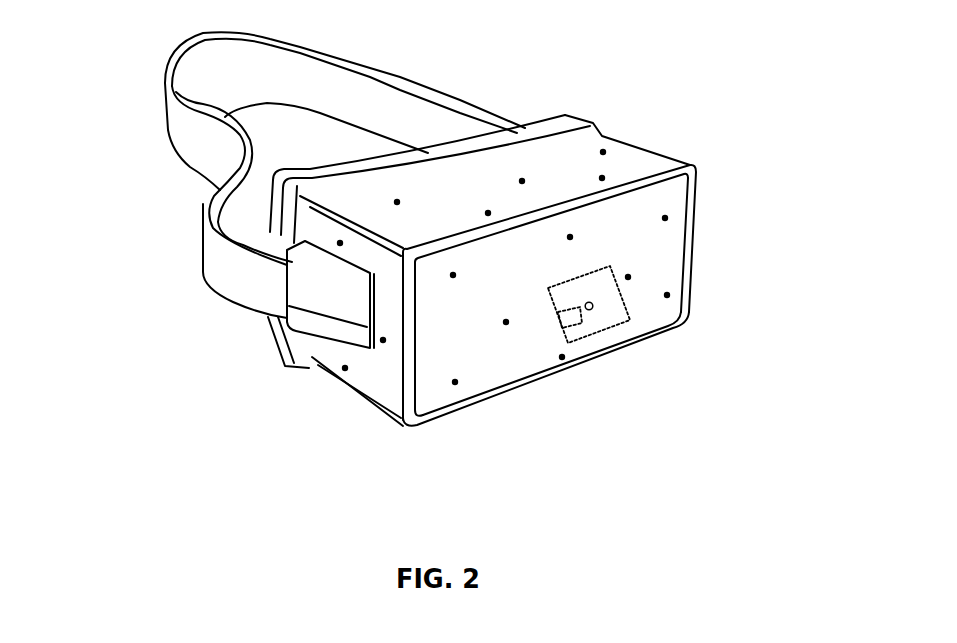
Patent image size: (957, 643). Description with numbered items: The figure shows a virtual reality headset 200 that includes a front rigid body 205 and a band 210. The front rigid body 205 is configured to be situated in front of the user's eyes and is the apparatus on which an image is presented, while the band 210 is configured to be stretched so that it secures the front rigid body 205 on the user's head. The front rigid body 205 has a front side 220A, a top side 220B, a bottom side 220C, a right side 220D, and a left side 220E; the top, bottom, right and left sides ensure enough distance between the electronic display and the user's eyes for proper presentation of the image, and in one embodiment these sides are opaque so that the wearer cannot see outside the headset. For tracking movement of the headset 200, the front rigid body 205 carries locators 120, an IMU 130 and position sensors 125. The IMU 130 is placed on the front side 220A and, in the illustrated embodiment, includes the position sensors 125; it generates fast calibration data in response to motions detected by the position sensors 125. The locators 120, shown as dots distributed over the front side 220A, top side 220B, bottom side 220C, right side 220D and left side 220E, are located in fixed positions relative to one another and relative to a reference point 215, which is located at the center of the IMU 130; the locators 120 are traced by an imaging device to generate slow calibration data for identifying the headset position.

The VR headset 200 is at (62, 29).
The band 210 is at (433, 90).
The front rigid body 205 is at (690, 163).
The front side 220A is at (438, 404).
The top side 220B is at (364, 202).
The bottom side 220C is at (336, 412).
The right side 220D is at (371, 392).
The left side 220E is at (672, 140).
The locators 120 is at (680, 288).
The position sensors 125 is at (563, 337).
The IMU 130 is at (645, 324).
The reference point 215 is at (595, 326).